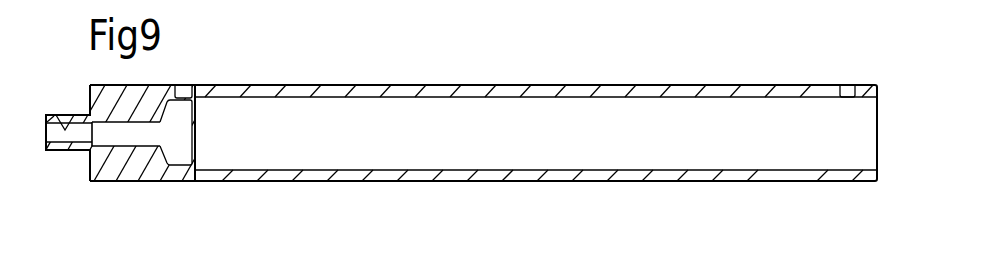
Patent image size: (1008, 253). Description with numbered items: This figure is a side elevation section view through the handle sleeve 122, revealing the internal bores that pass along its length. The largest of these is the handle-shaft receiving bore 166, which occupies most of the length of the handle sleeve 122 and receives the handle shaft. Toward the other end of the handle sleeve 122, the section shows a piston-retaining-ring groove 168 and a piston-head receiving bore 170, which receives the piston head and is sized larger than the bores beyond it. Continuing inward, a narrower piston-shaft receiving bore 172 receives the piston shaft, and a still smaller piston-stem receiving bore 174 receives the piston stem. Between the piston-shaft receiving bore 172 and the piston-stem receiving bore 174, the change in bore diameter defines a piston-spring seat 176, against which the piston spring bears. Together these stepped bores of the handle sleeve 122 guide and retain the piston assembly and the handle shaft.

The handle sleeve 122 is at (349, 52).
The handle-shaft receiving bore 166 is at (784, 173).
The piston-retaining-ring groove 168 is at (195, 157).
The piston-head receiving bore 170 is at (181, 166).
The piston-shaft receiving bore 172 is at (141, 148).
The piston-stem receiving bore 174 is at (83, 147).
The piston-spring seat 176 is at (112, 146).